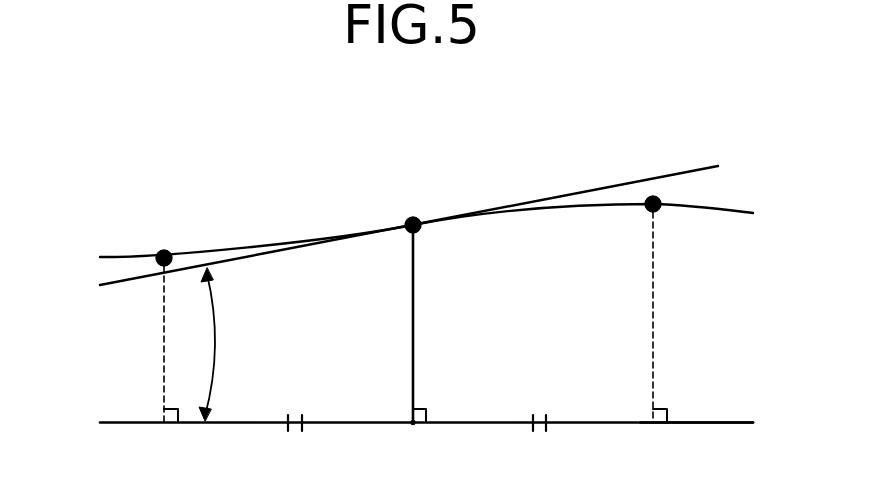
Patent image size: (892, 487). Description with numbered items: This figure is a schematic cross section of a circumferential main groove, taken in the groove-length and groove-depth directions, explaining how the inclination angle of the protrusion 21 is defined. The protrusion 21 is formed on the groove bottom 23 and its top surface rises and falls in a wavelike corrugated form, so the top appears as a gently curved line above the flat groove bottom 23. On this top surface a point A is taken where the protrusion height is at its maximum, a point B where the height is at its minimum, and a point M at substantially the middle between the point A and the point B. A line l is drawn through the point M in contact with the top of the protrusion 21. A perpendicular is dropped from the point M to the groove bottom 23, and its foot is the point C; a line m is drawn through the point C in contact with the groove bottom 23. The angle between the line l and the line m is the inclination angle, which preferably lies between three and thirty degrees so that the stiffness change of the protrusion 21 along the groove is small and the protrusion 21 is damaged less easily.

The protrusion 21 is at (738, 209).
The groove bottom 23 is at (693, 421).
The line l is at (680, 171).
The line m is at (748, 421).
The point A is at (656, 212).
The point B is at (163, 249).
The point C is at (412, 442).
The point M is at (414, 302).